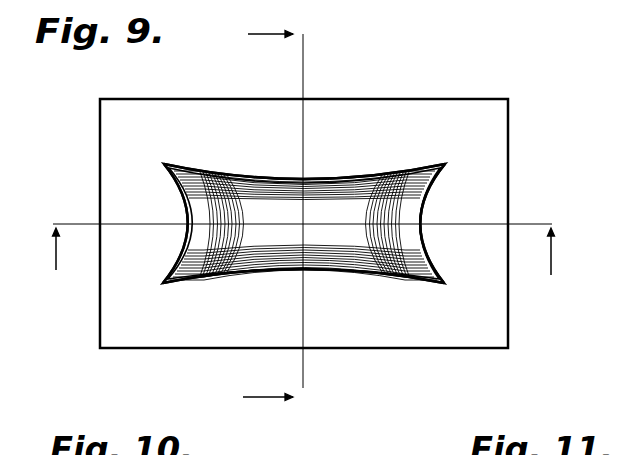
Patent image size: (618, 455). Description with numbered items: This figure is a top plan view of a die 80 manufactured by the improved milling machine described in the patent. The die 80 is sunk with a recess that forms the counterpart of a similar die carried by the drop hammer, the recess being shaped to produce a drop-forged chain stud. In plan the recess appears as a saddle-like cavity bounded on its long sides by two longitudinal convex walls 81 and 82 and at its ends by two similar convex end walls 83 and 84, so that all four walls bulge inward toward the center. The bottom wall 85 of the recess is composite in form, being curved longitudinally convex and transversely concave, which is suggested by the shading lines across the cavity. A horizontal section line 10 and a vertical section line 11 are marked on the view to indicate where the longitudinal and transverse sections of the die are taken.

The die 80 is at (108, 280).
The longitudinal convex wall 81 is at (205, 166).
The longitudinal convex wall 82 is at (237, 276).
The convex end wall 83 is at (186, 207).
The convex end wall 84 is at (431, 191).
The bottom wall 85 is at (290, 247).
The section line 10- 10 is at (301, 240).
The section line 11- 11 is at (279, 213).